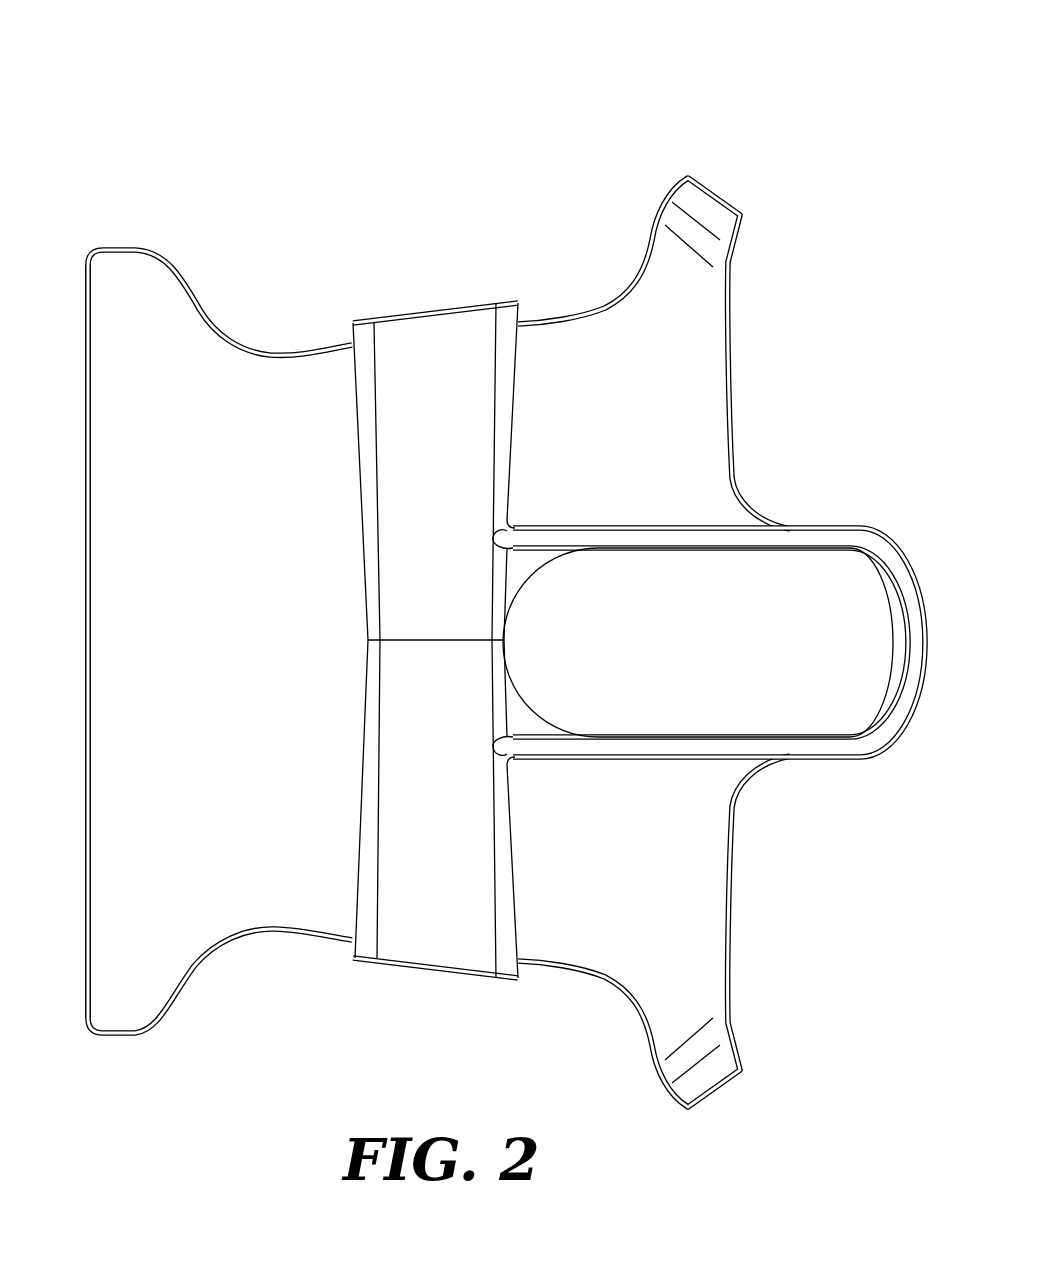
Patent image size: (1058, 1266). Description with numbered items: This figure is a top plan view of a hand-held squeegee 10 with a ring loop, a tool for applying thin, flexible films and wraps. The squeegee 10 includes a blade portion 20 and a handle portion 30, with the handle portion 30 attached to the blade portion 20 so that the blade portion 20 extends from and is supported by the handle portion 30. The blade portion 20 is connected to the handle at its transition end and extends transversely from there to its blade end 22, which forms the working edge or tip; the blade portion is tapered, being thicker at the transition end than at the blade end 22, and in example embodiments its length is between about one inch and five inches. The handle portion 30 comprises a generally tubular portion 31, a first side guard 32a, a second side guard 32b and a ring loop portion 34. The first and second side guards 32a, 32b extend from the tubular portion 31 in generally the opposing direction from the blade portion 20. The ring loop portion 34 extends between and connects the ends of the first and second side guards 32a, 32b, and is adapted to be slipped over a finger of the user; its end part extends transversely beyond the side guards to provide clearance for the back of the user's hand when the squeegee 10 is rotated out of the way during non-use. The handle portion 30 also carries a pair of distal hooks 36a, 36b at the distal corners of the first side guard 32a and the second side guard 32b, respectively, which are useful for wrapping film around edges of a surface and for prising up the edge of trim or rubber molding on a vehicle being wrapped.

The hand-held squeegee 10 is at (504, 594).
The blade portion 20 is at (197, 608).
The blade end 22 is at (86, 505).
The handle portion 30 is at (729, 646).
The tubular portion 31 is at (435, 912).
The first side guard 32a is at (659, 965).
The second side guard 32b is at (660, 323).
The ring loop portion 34 is at (903, 700).
The distal hook 36a is at (702, 1074).
The distal hook 36b is at (702, 212).